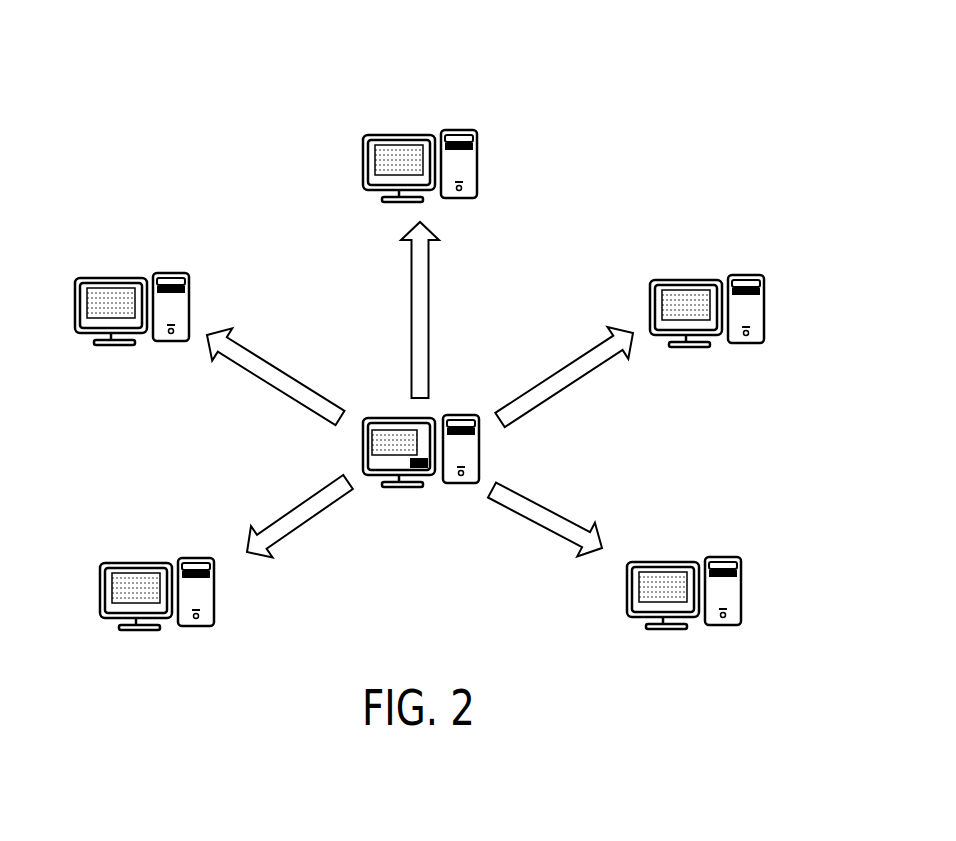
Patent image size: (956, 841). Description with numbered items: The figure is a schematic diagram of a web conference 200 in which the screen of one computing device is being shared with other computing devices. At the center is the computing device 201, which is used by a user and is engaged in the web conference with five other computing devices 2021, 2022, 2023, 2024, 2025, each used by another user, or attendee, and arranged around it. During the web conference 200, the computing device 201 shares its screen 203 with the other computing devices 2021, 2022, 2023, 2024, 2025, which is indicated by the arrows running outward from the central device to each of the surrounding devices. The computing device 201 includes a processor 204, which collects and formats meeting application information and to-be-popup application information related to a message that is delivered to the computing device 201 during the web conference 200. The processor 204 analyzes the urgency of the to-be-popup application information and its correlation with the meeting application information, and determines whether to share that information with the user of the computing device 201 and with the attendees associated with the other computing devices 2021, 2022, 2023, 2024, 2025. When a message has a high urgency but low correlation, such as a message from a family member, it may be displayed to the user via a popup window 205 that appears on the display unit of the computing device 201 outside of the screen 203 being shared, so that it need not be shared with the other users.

The web conference 200 is at (757, 100).
The computing device 201 is at (400, 425).
The other computing device 2021 is at (333, 163).
The other computing device 2022 is at (133, 270).
The other computing device 2023 is at (650, 278).
The other computing device 2024 is at (118, 555).
The other computing device 2025 is at (733, 550).
The screen 203 is at (380, 438).
The processor 204 is at (460, 417).
The popup window 205 is at (423, 467).